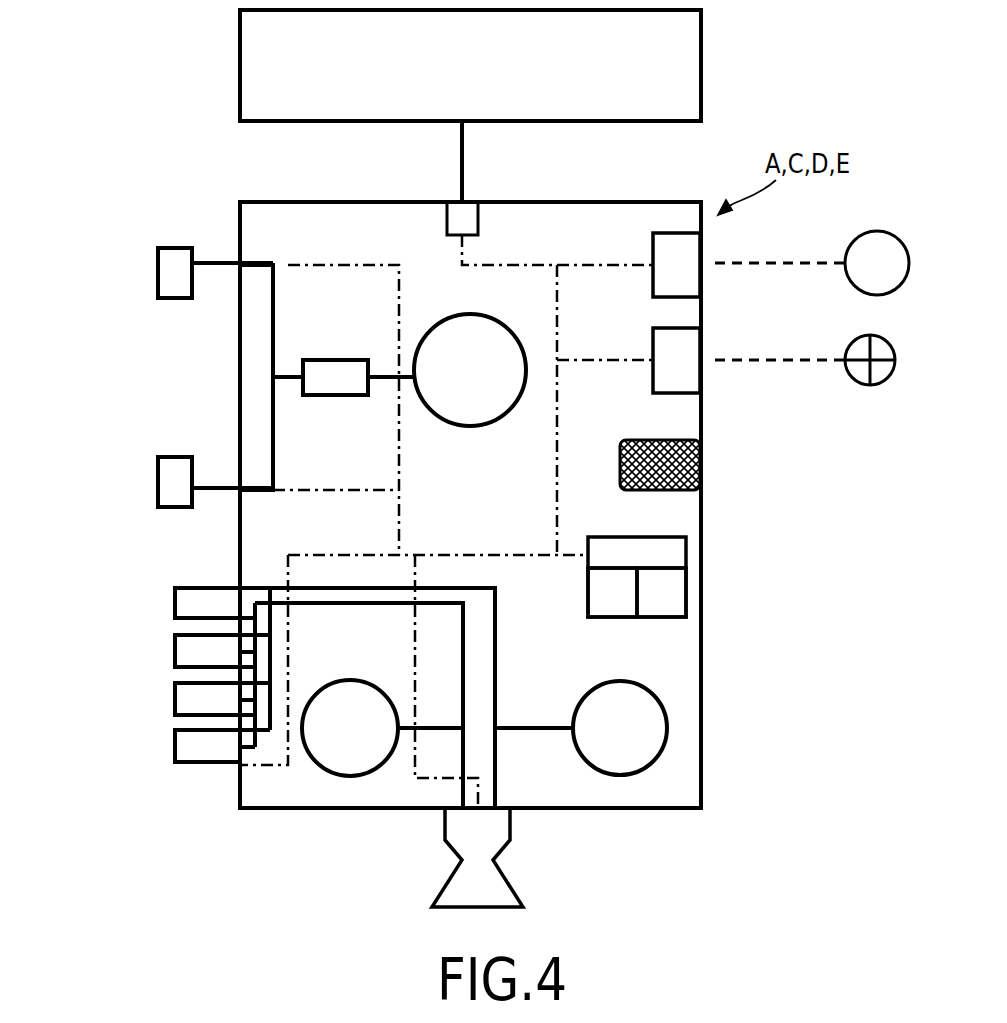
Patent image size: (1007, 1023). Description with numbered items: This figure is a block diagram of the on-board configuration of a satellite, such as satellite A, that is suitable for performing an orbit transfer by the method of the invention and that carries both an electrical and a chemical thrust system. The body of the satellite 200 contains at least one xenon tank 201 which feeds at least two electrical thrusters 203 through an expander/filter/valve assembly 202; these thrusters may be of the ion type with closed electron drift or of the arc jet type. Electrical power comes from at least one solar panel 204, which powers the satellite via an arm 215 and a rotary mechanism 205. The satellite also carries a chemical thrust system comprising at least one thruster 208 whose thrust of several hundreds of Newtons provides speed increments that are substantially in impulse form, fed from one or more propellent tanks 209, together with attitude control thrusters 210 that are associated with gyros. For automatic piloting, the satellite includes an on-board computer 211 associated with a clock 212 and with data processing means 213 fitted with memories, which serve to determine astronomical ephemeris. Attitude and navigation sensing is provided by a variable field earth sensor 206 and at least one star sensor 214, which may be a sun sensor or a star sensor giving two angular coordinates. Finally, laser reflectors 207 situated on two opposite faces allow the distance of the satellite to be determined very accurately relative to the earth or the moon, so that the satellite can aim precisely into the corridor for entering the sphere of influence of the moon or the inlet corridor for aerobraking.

The body of the satellite 200 is at (240, 558).
The xenon tank 201 is at (503, 418).
The expander/filter/valve assembly 202 is at (340, 395).
The electrical thrusters 203 is at (165, 283).
The solar panel 204 is at (240, 71).
The rotary mechanism 205 is at (447, 220).
The variable field earth sensor 206 is at (703, 387).
The laser reflectors 207 is at (703, 460).
The thruster 208 is at (510, 880).
The propellent tanks 209 is at (352, 765).
The attitude control thrusters 210 is at (175, 603).
The on-board computer 211 is at (675, 550).
The clock 212 is at (678, 592).
The data processing means 213 is at (602, 610).
The star sensor 214 is at (703, 252).
The arm 215 is at (462, 162).